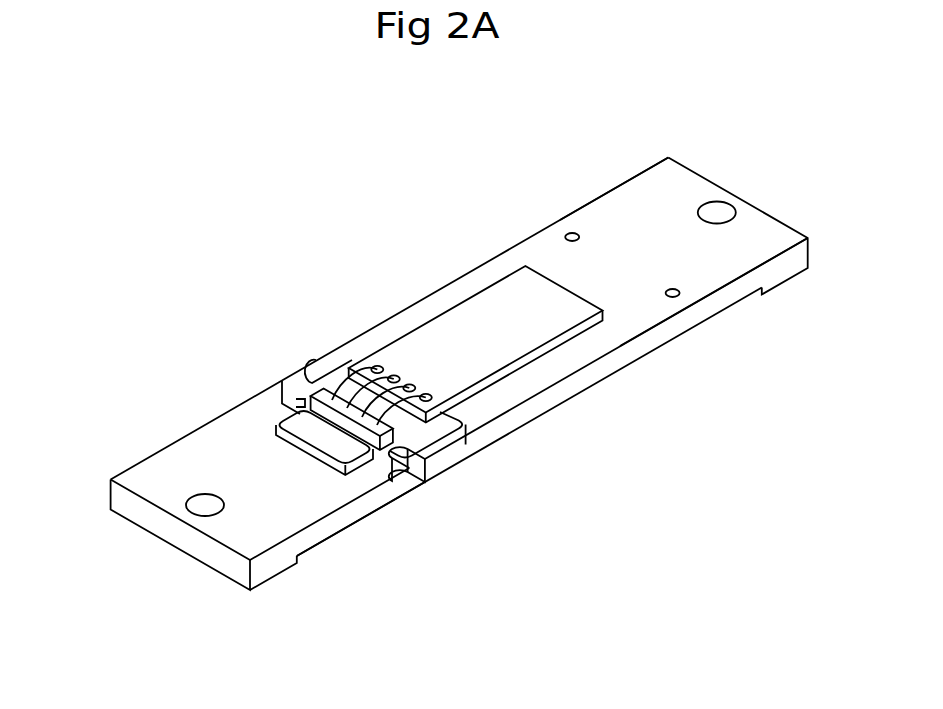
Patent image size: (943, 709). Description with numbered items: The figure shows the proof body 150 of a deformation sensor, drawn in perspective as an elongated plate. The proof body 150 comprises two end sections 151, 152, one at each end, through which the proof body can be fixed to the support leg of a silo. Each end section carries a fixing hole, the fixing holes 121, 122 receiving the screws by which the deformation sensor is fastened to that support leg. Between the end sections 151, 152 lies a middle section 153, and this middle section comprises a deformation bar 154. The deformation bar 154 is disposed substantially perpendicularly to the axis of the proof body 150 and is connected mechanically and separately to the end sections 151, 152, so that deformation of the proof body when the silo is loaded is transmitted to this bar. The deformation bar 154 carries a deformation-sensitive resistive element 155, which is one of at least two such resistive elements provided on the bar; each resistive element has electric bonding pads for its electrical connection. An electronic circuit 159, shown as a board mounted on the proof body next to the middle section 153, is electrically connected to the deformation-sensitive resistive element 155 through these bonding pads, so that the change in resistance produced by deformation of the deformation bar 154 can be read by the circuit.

The proof body 150 is at (613, 452).
The end section 151 is at (193, 428).
The end section 152 is at (613, 188).
The fixing hole 121 is at (188, 492).
The fixing hole 122 is at (718, 207).
The middle section 153 is at (421, 486).
The deformation bar 154 is at (355, 410).
The resistive element 155 is at (343, 452).
The electronic circuit 159 is at (500, 310).